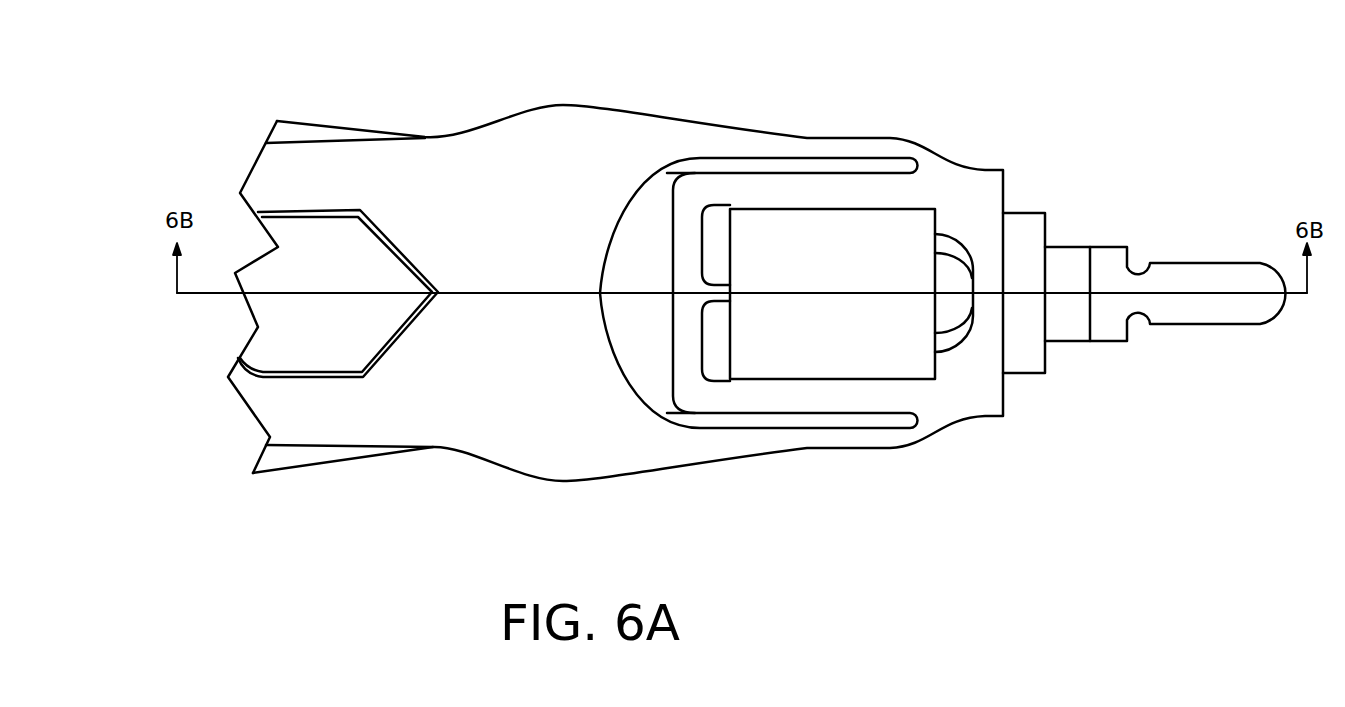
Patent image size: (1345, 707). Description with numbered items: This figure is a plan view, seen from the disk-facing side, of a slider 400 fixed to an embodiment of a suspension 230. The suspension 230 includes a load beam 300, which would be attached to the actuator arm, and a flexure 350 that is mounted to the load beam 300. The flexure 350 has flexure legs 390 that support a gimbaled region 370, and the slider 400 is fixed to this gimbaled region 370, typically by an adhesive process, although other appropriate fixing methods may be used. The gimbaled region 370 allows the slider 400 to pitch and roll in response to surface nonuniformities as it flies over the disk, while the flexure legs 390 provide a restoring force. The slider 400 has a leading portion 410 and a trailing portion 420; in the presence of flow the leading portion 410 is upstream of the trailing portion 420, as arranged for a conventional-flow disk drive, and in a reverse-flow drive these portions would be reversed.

The suspension 230 is at (396, 95).
The load beam 300 is at (410, 456).
The flexure 350 is at (549, 481).
The gimbaled region 370 is at (837, 193).
The flexure legs 390 is at (848, 148).
The slider 400 is at (868, 380).
The leading portion 410 is at (733, 322).
The trailing portion 420 is at (937, 325).